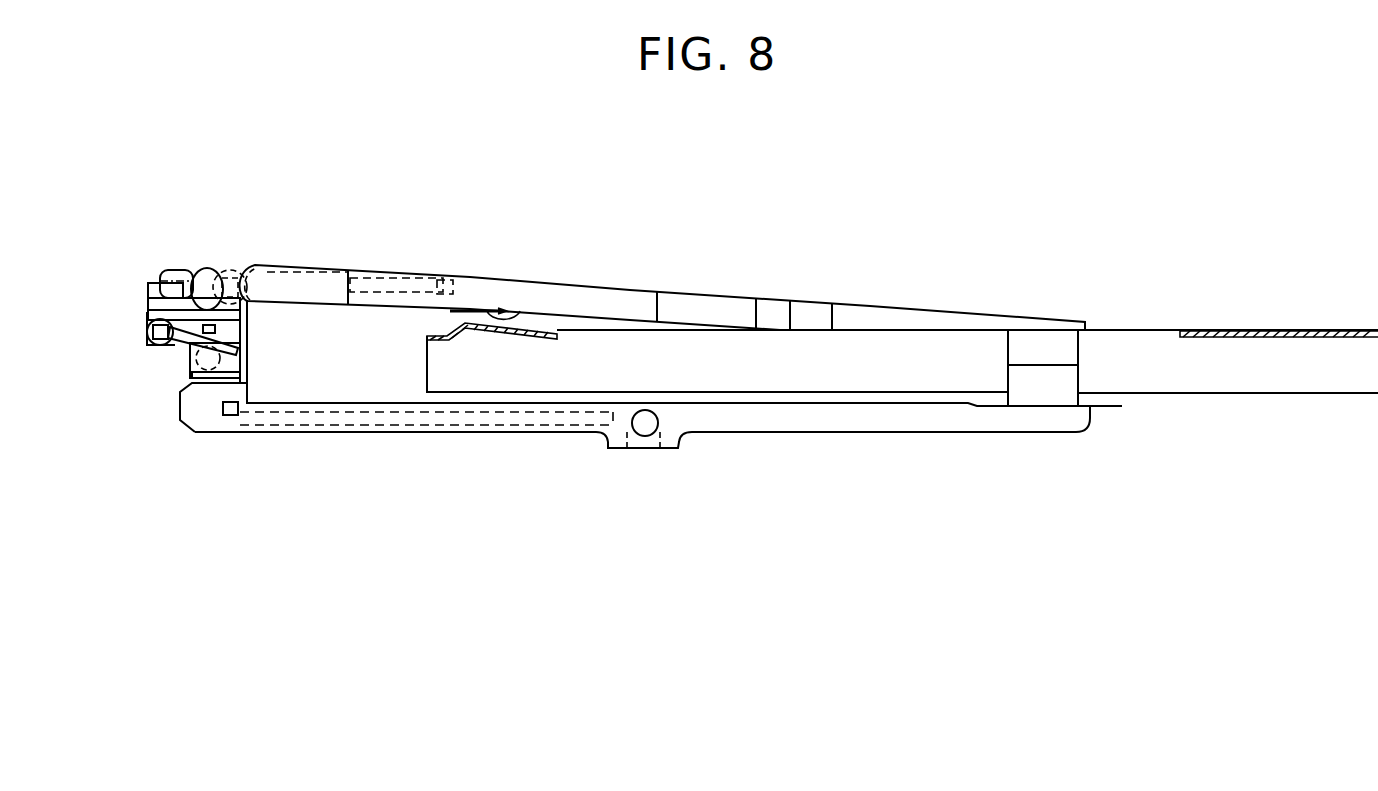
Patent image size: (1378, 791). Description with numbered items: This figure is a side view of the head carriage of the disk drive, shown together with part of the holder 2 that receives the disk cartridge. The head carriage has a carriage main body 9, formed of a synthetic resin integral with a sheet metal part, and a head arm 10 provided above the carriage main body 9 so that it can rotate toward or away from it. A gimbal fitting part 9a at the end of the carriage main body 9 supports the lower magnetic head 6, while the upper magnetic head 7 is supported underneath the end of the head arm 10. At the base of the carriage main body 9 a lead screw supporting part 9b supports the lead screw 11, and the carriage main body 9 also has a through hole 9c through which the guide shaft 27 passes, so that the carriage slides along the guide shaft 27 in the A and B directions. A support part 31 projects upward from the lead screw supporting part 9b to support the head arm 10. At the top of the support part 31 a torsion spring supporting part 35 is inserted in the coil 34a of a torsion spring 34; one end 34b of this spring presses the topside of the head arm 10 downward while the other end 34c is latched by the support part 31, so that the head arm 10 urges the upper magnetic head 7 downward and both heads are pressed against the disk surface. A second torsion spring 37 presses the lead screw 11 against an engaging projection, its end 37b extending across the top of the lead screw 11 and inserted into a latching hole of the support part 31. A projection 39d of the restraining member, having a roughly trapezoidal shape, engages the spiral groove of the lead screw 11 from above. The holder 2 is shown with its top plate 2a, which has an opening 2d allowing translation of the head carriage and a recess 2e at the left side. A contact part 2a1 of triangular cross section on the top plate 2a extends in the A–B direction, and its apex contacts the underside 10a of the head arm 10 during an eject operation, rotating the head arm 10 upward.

The holder 2 is at (935, 372).
The top plate 2a is at (1262, 330).
The contact part 2a1 is at (483, 311).
The opening 2d is at (1153, 333).
The recess 2e is at (425, 352).
The magnetic head 6 is at (1078, 385).
The magnetic head 7 is at (1075, 336).
The carriage main body 9 is at (818, 420).
The gimbal fitting part 9a is at (1060, 420).
The lead screw supporting part 9b is at (195, 390).
The through hole 9c is at (647, 432).
The head arm 10 is at (722, 300).
The underside 10a is at (516, 314).
The lead screw 11 is at (196, 357).
The guide shaft 27 is at (655, 428).
The support part 31 is at (245, 334).
The torsion spring 34 is at (258, 268).
The coil 34a is at (222, 268).
The end 34b is at (413, 273).
The other end 34c is at (153, 280).
The torsion spring supporting part 35 is at (238, 272).
The torsion spring 37 is at (150, 332).
The end 37b is at (225, 342).
The projection 39d is at (243, 350).